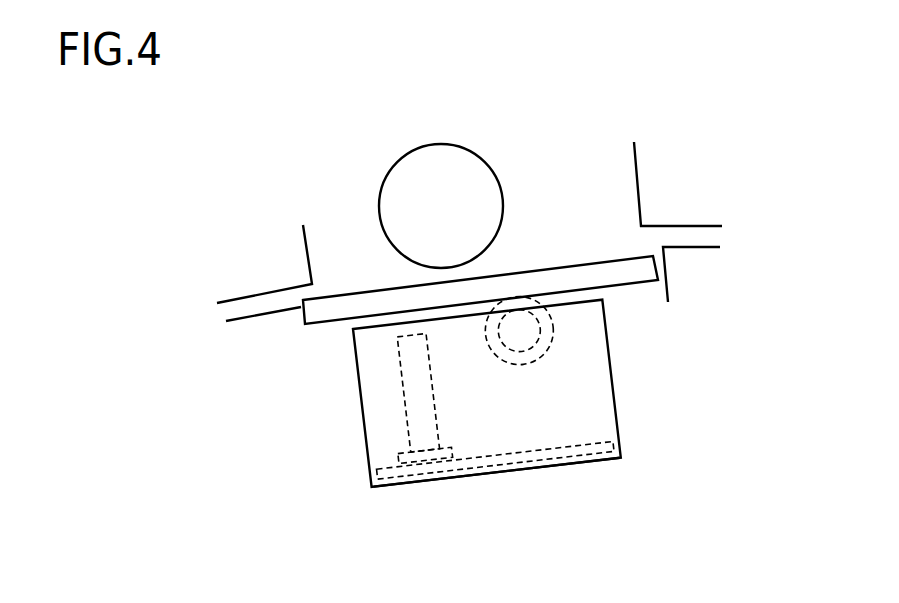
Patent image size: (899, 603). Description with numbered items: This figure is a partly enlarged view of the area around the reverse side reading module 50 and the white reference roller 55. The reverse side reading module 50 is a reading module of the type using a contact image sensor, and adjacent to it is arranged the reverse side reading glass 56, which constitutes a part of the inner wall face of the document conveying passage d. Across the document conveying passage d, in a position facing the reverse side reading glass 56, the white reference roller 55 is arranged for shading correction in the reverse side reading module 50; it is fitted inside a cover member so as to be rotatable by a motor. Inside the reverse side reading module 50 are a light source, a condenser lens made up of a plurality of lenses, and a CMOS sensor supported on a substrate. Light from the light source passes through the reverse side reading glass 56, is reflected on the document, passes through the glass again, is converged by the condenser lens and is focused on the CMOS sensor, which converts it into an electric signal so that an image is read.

The reverse side reading module 50 is at (640, 417).
The white reference roller 55 is at (415, 170).
The reverse side reading glass 56 is at (588, 279).
The document conveying passage d is at (217, 314).